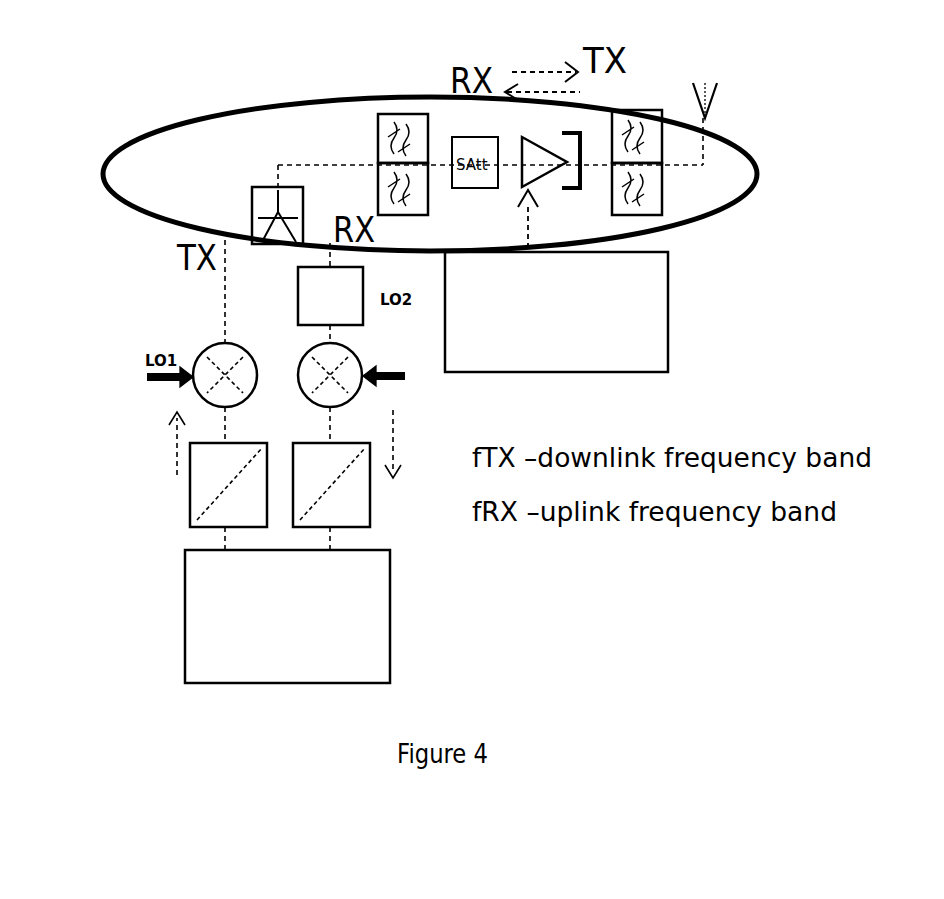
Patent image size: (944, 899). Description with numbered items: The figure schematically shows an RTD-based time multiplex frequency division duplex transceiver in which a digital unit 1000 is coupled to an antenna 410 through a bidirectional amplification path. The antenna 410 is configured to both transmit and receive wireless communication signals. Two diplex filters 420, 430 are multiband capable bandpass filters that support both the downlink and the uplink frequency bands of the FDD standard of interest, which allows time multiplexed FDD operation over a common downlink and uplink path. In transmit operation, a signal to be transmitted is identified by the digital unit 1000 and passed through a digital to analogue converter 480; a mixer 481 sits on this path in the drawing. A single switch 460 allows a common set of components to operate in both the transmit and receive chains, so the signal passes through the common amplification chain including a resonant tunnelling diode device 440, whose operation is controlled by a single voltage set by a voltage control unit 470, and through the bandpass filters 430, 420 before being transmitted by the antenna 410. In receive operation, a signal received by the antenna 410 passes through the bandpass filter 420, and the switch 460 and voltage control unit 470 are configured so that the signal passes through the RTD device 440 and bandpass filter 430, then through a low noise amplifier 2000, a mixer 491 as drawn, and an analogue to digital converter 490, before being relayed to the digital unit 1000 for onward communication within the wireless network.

The antenna 410 is at (773, 107).
The diplex filter 420 is at (640, 147).
The diplex filter 430 is at (410, 135).
The resonant tunnelling diode device 440 is at (537, 163).
The switch 460 is at (257, 193).
The voltage control unit 470 is at (556, 312).
The digital to analogue converter 480 is at (207, 498).
The up-conversion mixer 481 is at (186, 393).
The analogue to digital converter 490 is at (335, 468).
The down-conversion mixer 491 is at (362, 388).
The digital unit 1000 is at (287, 616).
The low noise amplifier 2000 is at (313, 302).